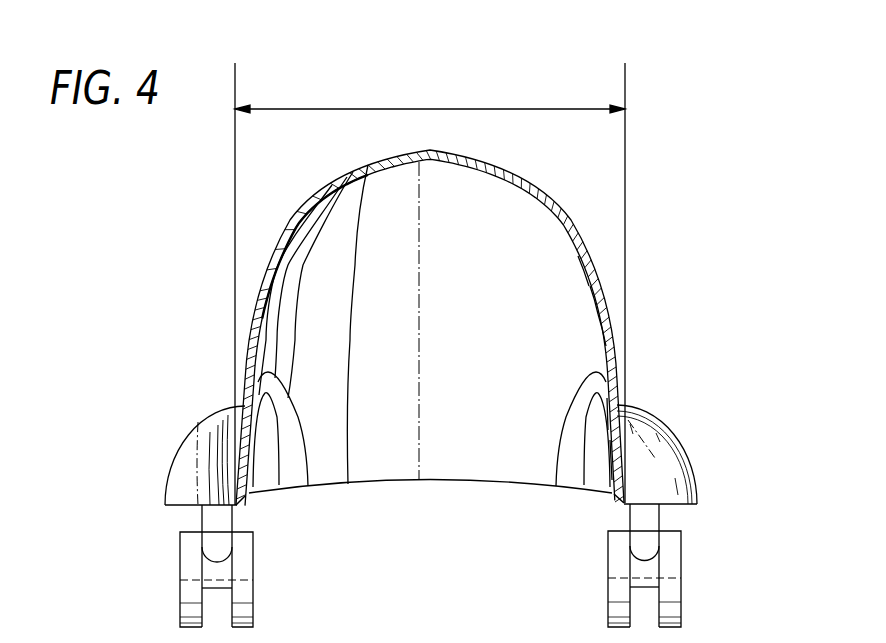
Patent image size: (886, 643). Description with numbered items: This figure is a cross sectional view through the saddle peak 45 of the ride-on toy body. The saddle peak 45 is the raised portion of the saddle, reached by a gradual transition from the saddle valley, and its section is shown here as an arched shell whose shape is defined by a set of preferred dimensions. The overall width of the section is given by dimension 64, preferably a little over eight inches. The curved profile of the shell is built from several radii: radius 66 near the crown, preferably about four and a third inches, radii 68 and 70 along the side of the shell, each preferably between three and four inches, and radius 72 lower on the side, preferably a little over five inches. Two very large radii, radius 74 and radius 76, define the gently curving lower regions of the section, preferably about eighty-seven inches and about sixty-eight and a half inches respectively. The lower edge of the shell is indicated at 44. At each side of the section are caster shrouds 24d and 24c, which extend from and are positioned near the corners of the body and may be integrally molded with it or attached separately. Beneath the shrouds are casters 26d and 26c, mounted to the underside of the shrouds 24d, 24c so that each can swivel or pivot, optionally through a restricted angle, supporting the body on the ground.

The saddle peak width dimension 64 is at (430, 108).
The saddle peak radius 66 is at (493, 165).
The saddle peak 45 is at (365, 165).
The saddle peak radius 68 is at (583, 248).
The saddle peak radius 70 is at (598, 281).
The saddle peak radius 72 is at (605, 308).
The saddle peak radius 74 is at (617, 410).
The saddle peak radius 76 is at (622, 462).
The bottom rim 44 is at (393, 477).
The caster shroud 24d is at (188, 440).
The caster shroud 24c is at (696, 500).
The caster 26d is at (182, 580).
The caster 26c is at (681, 577).